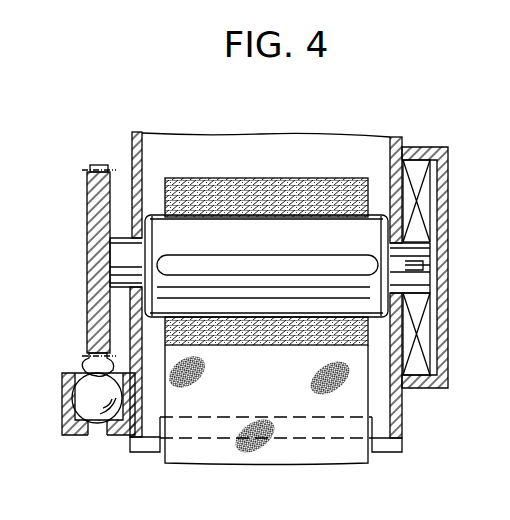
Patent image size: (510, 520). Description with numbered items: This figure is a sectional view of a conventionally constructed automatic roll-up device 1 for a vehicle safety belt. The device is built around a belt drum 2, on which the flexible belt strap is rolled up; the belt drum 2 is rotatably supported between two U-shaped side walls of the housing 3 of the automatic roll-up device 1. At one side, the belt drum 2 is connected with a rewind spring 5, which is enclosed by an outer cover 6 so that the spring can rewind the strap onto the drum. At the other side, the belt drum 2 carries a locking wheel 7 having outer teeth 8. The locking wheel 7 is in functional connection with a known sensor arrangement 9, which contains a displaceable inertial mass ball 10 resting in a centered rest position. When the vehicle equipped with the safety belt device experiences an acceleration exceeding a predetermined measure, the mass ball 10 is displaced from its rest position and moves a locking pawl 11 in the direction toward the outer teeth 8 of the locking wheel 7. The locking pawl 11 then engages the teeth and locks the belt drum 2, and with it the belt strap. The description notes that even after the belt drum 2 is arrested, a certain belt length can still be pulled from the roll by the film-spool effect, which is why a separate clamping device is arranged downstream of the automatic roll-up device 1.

The automatic roll-up device 1 is at (425, 137).
The belt drum 2 is at (251, 234).
The housing 3 is at (131, 134).
The rewind spring 5 is at (427, 202).
The outer cover 6 is at (443, 247).
The locking wheel 7 is at (96, 200).
The outer teeth 8 is at (99, 165).
The sensor arrangement 9 is at (58, 384).
The mass ball 10 is at (90, 423).
The locking pawl 11 is at (87, 363).